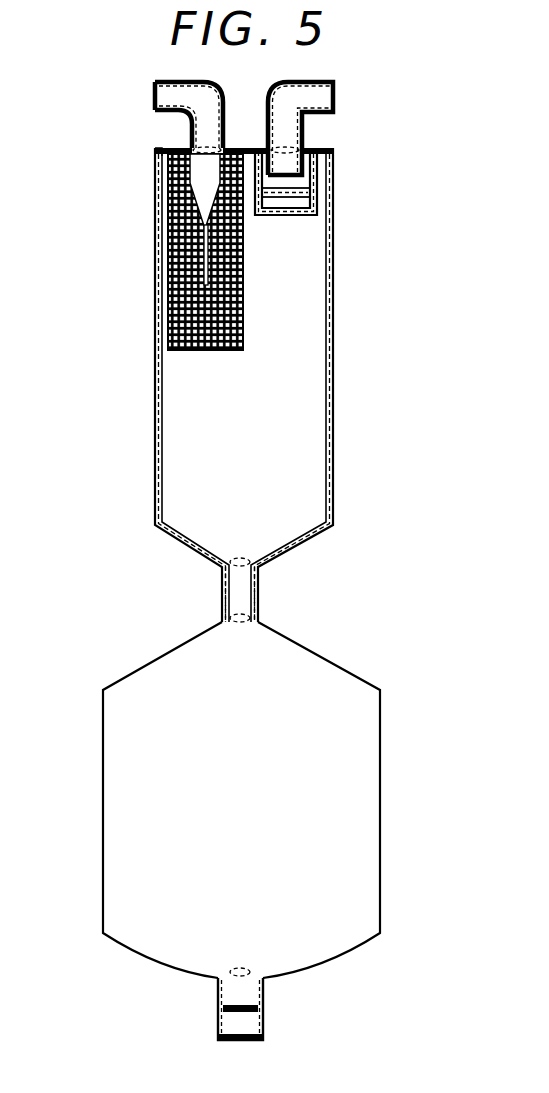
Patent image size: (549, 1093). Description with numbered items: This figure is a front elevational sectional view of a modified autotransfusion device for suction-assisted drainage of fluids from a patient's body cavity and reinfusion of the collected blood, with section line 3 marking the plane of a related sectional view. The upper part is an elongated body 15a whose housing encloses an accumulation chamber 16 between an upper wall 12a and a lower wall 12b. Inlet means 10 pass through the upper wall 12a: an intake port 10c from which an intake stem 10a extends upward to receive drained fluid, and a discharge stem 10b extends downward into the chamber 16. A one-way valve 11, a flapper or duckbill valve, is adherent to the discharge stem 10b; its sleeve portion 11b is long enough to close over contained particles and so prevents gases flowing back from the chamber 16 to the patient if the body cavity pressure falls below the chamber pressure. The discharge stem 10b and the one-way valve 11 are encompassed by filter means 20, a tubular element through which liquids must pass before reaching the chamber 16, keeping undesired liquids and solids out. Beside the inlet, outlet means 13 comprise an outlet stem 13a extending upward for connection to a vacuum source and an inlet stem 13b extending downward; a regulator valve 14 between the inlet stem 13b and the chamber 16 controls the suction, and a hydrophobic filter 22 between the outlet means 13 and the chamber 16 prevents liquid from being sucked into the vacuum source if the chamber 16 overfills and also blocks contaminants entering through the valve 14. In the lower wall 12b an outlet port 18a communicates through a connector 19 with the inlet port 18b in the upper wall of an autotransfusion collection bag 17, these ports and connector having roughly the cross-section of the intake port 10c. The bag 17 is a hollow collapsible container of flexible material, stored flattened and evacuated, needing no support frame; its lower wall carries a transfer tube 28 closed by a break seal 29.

The section line 3- 3 is at (108, 348).
The inlet means 10 is at (134, 66).
The intake stem 10a is at (220, 76).
The discharge stem 10b is at (172, 168).
The intake port 10c is at (218, 118).
The one-way valve 11 is at (168, 203).
The sleeve portion 11b is at (203, 265).
The upper wall 12a is at (165, 148).
The lower wall 12b is at (186, 548).
The outlet means 13 is at (315, 60).
The outlet stem 13a is at (302, 123).
The inlet stem 13b is at (302, 167).
The regulator valve 14 is at (314, 185).
The elongated body 15a is at (155, 450).
The accumulation chamber 16 is at (258, 423).
The autotransfusion collection bag 17 is at (103, 793).
The outlet port 18a is at (259, 560).
The inlet port 18b is at (238, 628).
The connector 19 is at (260, 606).
The filter means 20 is at (157, 392).
The hydrophobic filter 22 is at (305, 216).
The transfer tube 28 is at (263, 1032).
The break seal 29 is at (220, 1016).